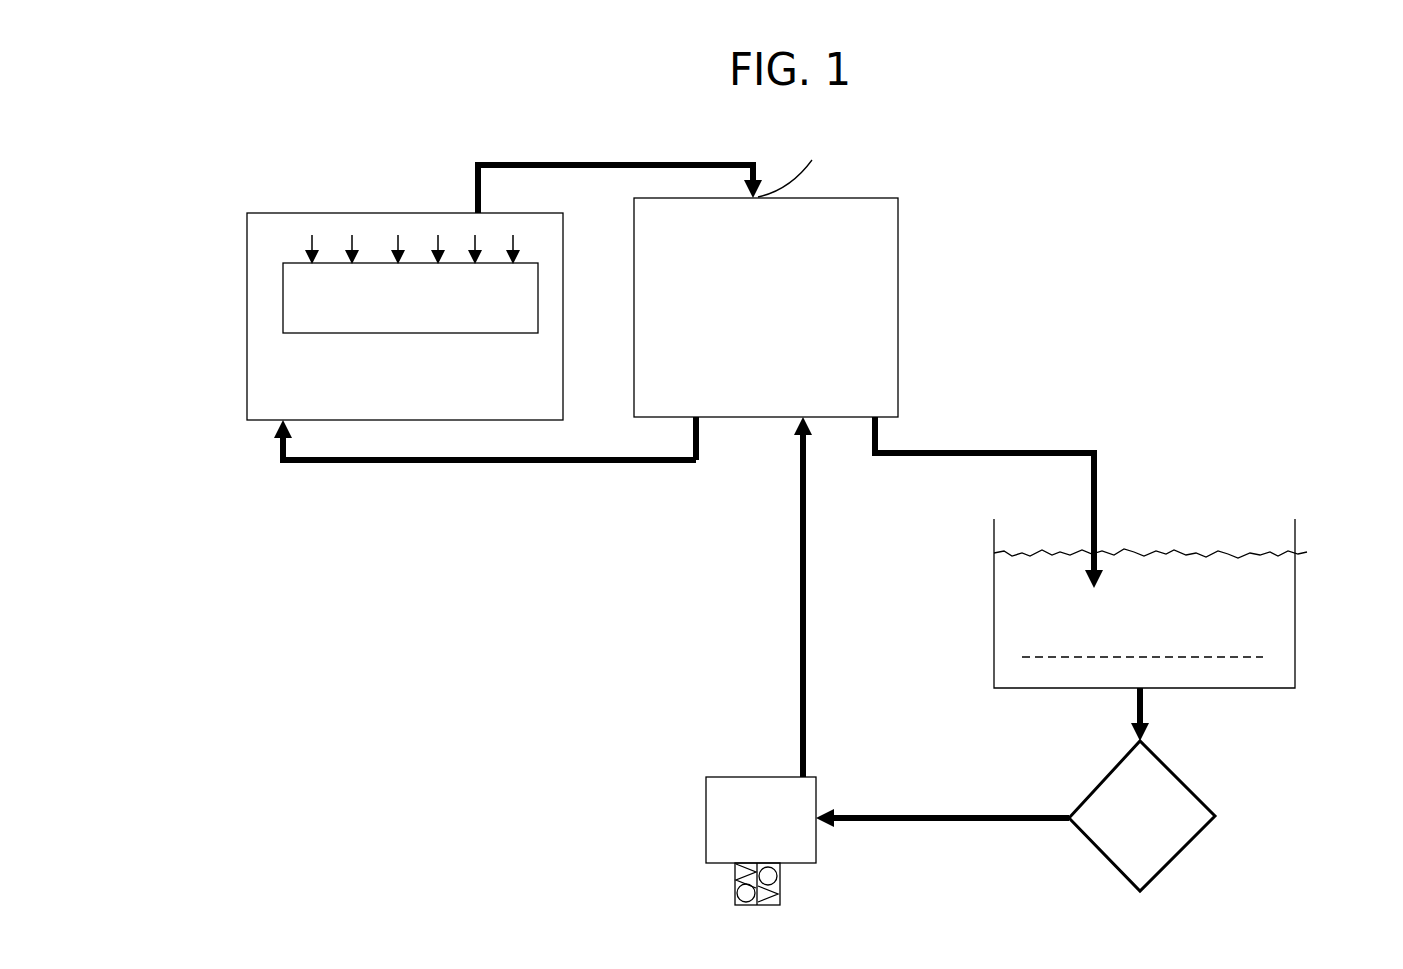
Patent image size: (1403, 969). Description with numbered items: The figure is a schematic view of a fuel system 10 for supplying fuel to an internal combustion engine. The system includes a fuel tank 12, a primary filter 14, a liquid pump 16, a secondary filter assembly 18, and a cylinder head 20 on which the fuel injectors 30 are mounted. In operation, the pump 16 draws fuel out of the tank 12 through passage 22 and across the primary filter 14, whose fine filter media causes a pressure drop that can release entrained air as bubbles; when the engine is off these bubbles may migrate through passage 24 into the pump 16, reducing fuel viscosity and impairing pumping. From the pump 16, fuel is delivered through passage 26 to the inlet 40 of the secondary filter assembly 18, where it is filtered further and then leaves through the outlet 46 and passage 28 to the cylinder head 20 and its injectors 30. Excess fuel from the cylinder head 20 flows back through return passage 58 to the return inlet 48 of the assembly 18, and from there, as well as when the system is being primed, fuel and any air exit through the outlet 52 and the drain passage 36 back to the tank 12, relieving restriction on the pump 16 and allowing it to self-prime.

The fuel system 10 is at (1022, 178).
The fuel tank 12 is at (1297, 608).
The primary filter 14 is at (1217, 815).
The liquid pump 16 is at (706, 815).
The secondary filter assembly 18 is at (899, 252).
The cylinder head 20 is at (246, 324).
The passage 22 is at (1145, 710).
The passage 24 is at (876, 815).
The passage 26 is at (800, 632).
The passage 28 is at (512, 463).
The fuel injectors 30 is at (312, 238).
The drain passage 36 is at (1013, 448).
The inlet 40 is at (798, 419).
The outlet to the cylinder head 46 is at (698, 427).
The return inlet 48 is at (812, 160).
The outlet to the fuel tank 52 is at (880, 418).
The return passage 58 is at (598, 162).